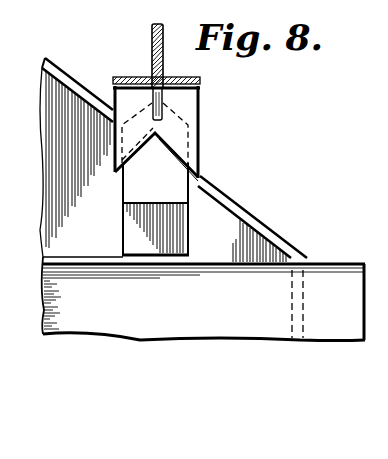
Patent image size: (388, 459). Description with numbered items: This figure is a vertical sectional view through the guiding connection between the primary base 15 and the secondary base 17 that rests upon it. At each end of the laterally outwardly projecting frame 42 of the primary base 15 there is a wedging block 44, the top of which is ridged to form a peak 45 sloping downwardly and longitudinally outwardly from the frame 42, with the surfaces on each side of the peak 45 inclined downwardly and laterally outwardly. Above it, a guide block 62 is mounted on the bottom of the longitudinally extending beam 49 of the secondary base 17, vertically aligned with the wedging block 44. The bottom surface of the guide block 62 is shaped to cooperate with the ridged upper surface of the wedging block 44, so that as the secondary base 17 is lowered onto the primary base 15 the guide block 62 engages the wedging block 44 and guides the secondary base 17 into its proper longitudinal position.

The secondary base 17 is at (151, 40).
The beam 49 is at (152, 58).
The guide block 62 is at (185, 103).
The peak 45 is at (162, 121).
The wedging block 44 is at (152, 164).
The frame 42 is at (218, 183).
The primary base 15 is at (260, 219).